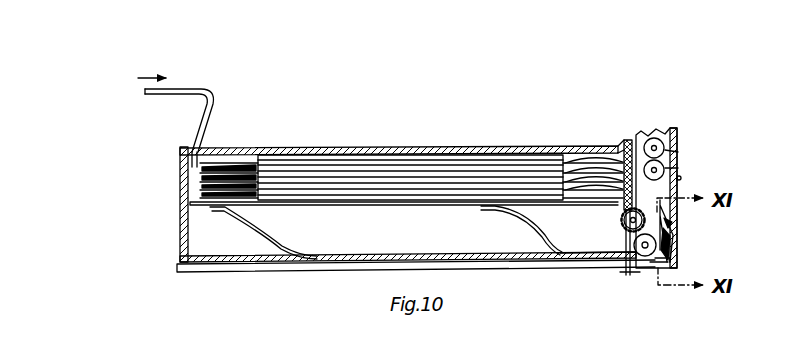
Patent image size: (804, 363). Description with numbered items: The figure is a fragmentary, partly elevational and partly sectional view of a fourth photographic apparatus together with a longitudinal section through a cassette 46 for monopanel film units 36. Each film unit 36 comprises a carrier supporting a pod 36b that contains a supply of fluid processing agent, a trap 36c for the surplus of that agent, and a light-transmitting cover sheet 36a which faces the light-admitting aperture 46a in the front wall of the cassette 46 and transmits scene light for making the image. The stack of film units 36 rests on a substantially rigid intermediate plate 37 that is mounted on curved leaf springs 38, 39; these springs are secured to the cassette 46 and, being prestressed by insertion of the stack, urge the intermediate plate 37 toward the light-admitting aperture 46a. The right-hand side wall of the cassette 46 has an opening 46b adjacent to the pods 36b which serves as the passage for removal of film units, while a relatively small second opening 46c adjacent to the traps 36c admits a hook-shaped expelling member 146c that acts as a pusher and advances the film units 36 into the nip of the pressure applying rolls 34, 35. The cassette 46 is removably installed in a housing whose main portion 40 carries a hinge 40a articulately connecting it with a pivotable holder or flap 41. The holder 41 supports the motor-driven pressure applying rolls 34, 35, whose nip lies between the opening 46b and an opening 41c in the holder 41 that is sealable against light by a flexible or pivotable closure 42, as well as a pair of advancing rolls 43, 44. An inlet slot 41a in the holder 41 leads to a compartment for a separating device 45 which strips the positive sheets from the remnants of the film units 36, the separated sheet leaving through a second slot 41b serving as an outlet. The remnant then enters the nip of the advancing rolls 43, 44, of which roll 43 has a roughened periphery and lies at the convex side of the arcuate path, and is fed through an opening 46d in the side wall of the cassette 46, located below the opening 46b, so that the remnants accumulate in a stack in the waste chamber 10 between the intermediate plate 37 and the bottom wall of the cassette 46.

The waste chamber 10 is at (345, 243).
The pressure applying roll 34 is at (662, 143).
The pressure applying roll 35 is at (679, 168).
The film unit 36 is at (577, 146).
The light-transmitting sheet 36a is at (463, 146).
The pod 36b is at (599, 157).
The trap 36c is at (236, 154).
The intermediate plate 37 is at (197, 206).
The curved leaf spring 38 is at (256, 237).
The curved leaf spring 39 is at (532, 230).
The main portion of the housing 40 is at (543, 266).
The hinge 40a is at (629, 270).
The holder 41 is at (681, 240).
The slot 41a is at (657, 263).
The second slot 41b is at (673, 223).
The opening in the holder 41c is at (678, 152).
The closure 42 is at (683, 175).
The advancing roll 43 is at (621, 221).
The advancing roll 44 is at (632, 240).
The separating device 45 is at (672, 260).
The cassette 46 is at (179, 191).
The light-admitting aperture 46a is at (337, 148).
The opening 46b is at (641, 143).
The second opening 46c is at (186, 150).
The opening 46d is at (625, 247).
The hook-shaped expelling member 146c is at (200, 88).